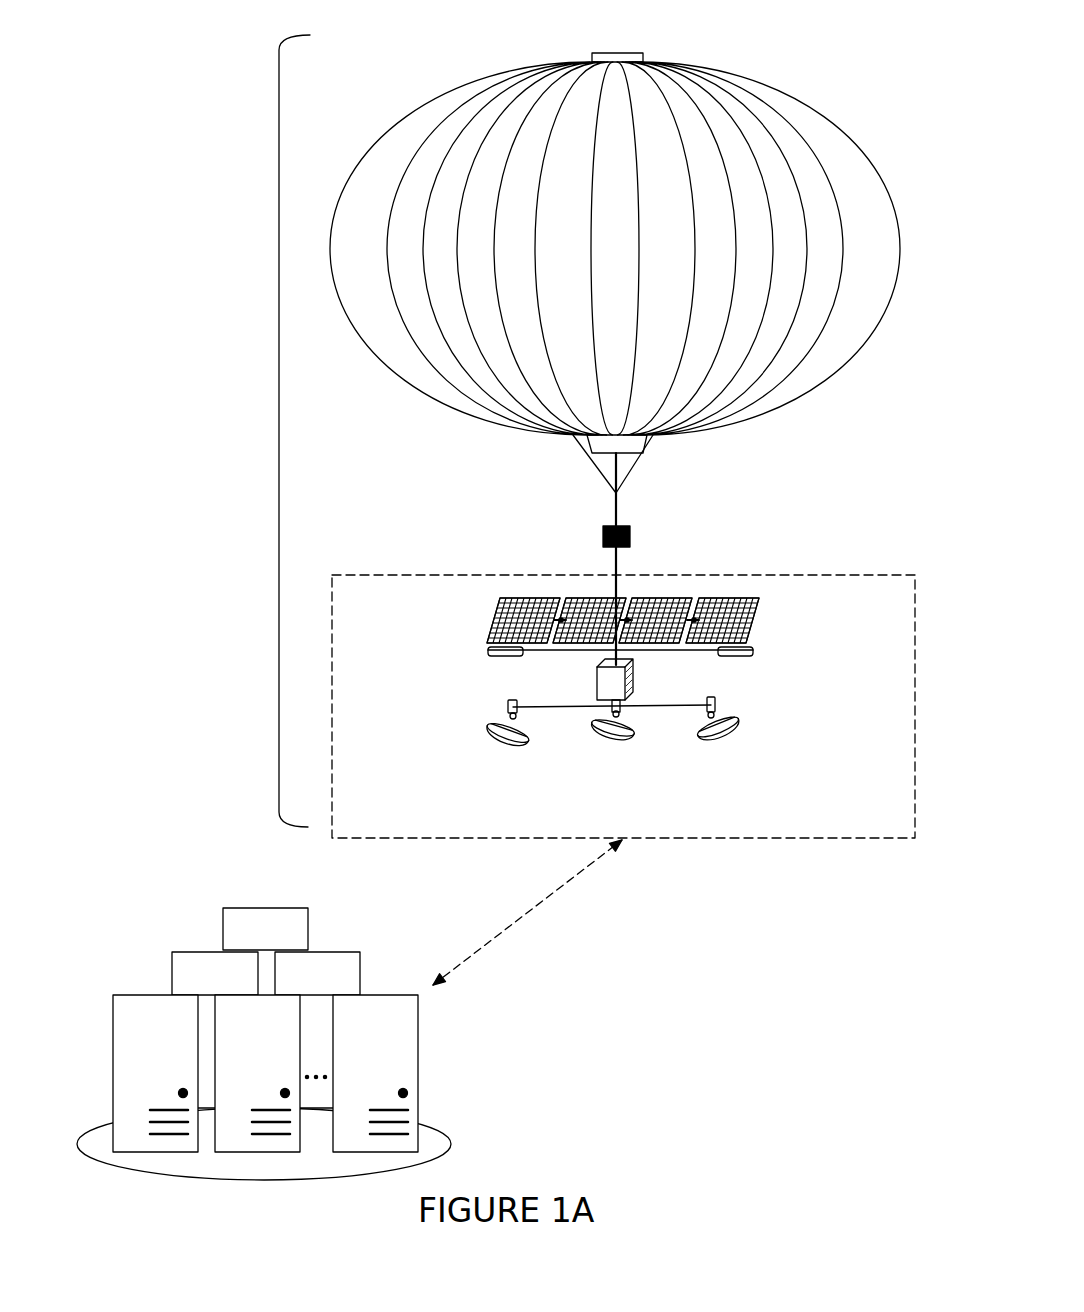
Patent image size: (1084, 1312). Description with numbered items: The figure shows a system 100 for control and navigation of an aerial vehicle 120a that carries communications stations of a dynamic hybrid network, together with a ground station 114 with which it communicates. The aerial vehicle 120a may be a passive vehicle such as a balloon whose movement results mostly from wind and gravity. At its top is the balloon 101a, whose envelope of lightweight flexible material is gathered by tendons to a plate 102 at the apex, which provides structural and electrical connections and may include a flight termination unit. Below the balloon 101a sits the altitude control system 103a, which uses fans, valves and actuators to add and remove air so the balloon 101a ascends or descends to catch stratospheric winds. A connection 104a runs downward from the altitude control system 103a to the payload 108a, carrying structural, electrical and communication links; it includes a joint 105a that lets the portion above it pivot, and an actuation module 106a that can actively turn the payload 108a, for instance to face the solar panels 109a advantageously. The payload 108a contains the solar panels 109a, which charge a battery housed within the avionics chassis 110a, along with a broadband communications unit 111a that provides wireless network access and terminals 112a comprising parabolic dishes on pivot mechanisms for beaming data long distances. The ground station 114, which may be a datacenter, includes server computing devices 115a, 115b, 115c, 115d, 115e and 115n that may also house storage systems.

The system 100 is at (150, 103).
The balloon 101a is at (852, 145).
The plate 102 is at (645, 54).
The altitude control system (ACS) 103a is at (637, 447).
The connection 104a is at (615, 510).
The joint 105a is at (620, 493).
The actuation module 106a is at (602, 537).
The payload 108a is at (410, 622).
The solar panel 109a is at (765, 610).
The avionics chassis 110a is at (597, 685).
The broadband communications unit 111a is at (733, 658).
The terminal 112a is at (530, 742).
The ground station 114 is at (310, 1044).
The server computing device 115a is at (297, 941).
The server computing device 115b is at (248, 986).
The server computing device 115c is at (348, 986).
The server computing device 115d is at (189, 1029).
The server computing device 115e is at (290, 1029).
The server computing device 115n is at (408, 1029).
The aerial vehicle 120a is at (279, 432).